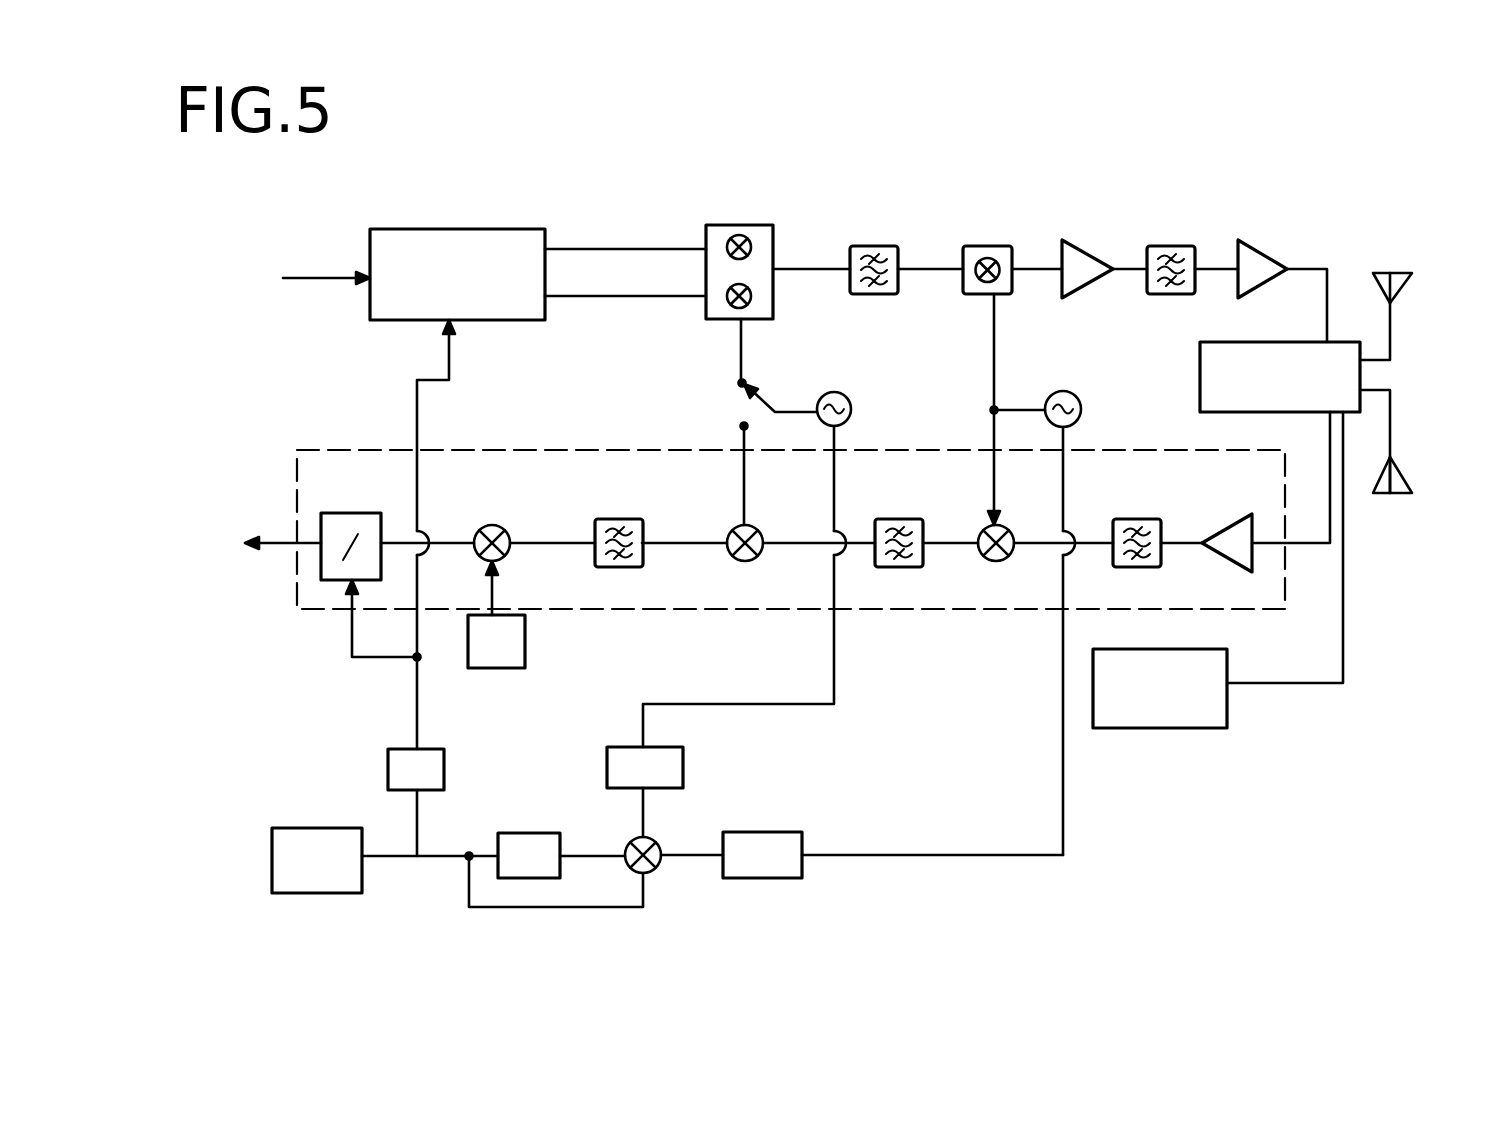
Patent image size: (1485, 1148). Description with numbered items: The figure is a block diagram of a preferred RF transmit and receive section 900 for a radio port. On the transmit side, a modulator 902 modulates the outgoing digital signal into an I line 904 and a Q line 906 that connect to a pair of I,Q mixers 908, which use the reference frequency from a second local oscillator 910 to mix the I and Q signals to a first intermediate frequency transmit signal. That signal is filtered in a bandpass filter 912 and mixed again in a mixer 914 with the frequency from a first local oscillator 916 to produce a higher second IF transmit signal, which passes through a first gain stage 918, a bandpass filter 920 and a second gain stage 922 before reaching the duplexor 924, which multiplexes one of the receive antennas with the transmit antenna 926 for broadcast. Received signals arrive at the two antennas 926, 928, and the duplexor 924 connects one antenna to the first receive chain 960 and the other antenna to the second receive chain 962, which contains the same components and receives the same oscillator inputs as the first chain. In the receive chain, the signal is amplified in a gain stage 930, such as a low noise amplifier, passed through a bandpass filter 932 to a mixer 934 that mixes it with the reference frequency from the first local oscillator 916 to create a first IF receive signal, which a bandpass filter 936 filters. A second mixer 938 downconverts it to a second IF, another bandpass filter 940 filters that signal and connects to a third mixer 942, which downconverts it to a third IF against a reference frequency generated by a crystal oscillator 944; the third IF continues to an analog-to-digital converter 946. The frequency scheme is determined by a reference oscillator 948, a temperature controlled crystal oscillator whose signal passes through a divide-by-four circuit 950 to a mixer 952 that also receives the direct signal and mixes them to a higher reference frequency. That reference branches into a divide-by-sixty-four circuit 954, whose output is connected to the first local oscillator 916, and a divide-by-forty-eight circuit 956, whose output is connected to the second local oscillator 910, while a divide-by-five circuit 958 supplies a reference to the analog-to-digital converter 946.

The RF transmit and receive section 900 is at (925, 155).
The modulator 902 is at (468, 229).
The I line 904 is at (603, 248).
The Q line 906 is at (593, 297).
The pair of I,Q mixers 908 is at (733, 225).
The second local oscillator (LO2) 910 is at (828, 393).
The bandpass filter 912 is at (870, 247).
The mixer 914 is at (978, 247).
The first local oscillator (LO1) 916 is at (1058, 392).
The first gain stage 918 is at (1078, 247).
The bandpass filter 920 is at (1168, 247).
The second gain stage 922 is at (1262, 243).
The duplexor 924 is at (1265, 342).
The transmit antenna 926 is at (1398, 280).
The receive antenna 928 is at (1400, 478).
The gain stage 930 is at (1218, 523).
The bandpass filter 932 is at (1150, 519).
The mixer 934 is at (992, 559).
The bandpass filter 936 is at (897, 519).
The second mixer 938 is at (745, 561).
The bandpass filter 940 is at (617, 568).
The third mixer 942 is at (506, 530).
The crystal oscillator 944 is at (525, 640).
The analog-to-digital (A/D) converter 946 is at (350, 513).
The reference oscillator (TCXO) 948 is at (322, 828).
The divide-by-four circuit 950 is at (537, 833).
The mixer 952 is at (658, 866).
The divide-by-64 circuit 954 is at (763, 832).
The divide-by-48 circuit 956 is at (683, 768).
The divide-by-5 circuit 958 is at (388, 762).
The first receive chain 960 is at (1088, 442).
The second receive chain 962 is at (1215, 712).